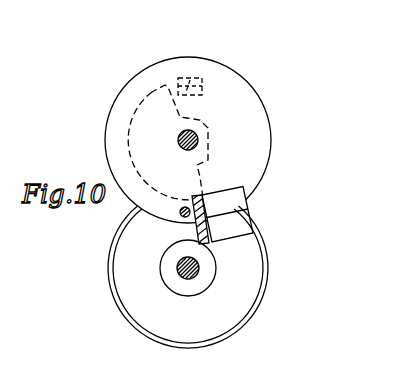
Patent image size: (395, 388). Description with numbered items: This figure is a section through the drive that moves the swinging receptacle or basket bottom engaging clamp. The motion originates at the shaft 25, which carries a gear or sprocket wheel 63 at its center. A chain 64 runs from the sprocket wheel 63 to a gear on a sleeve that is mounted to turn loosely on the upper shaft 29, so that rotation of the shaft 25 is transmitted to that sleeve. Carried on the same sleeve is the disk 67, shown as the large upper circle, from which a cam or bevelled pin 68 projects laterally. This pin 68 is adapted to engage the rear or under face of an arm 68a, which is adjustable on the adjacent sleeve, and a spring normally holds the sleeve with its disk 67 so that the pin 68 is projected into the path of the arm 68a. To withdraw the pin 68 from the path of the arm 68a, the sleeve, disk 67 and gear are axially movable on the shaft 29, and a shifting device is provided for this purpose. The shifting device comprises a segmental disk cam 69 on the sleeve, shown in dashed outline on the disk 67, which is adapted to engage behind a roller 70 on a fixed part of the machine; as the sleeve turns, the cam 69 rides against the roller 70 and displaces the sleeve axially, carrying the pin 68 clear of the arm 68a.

The disk 67 is at (255, 90).
The segmental disk cam 69 is at (152, 90).
The roller 70 is at (195, 78).
The shaft 29 is at (199, 141).
The chain 64 is at (216, 232).
The arm 68a is at (232, 230).
The cam or bevelled pin 68 is at (186, 214).
The gear or sprocket wheel 63 is at (157, 319).
The shaft 25 is at (196, 277).